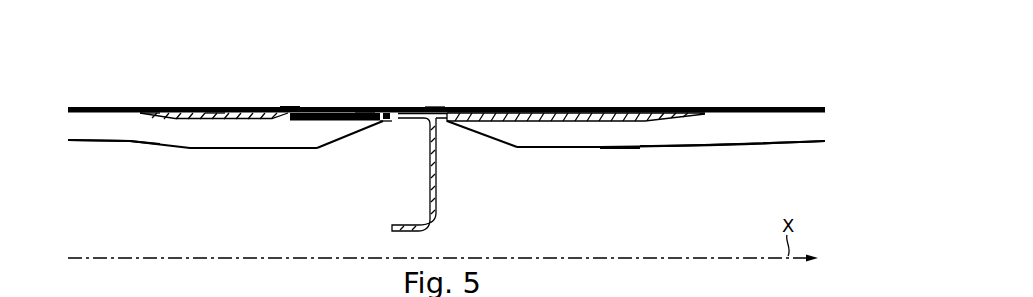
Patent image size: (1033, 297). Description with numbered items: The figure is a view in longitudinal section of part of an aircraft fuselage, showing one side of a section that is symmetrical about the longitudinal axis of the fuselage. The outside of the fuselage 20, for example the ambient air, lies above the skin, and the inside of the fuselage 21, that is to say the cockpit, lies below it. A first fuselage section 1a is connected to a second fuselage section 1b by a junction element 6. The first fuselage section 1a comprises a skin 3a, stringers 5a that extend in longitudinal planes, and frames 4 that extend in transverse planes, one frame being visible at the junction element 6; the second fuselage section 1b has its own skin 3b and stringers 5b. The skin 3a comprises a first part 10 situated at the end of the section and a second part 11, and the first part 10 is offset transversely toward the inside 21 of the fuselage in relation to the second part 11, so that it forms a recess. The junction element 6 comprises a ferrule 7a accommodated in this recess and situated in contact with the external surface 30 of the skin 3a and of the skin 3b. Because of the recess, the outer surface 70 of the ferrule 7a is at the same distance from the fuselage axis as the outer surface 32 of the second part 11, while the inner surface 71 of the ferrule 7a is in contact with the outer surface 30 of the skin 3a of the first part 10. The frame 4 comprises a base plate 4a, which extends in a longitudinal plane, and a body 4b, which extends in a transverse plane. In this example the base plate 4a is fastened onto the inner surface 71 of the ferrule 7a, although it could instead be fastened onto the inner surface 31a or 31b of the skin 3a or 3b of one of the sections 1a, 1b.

The outside of the fuselage 20 is at (688, 66).
The first part of skin 10 is at (293, 90).
The second part of skin 11 is at (147, 102).
The skin 3a is at (178, 111).
The outer surface of second part 32 is at (215, 106).
The outer surface of skin 30 is at (318, 109).
The outer surface of ferrule 70 is at (365, 107).
The ferrule 7a is at (386, 117).
The inner surface of ferrule 71 is at (385, 122).
The junction element 6 is at (433, 90).
The frame 4 is at (430, 150).
The base plate 4a is at (419, 113).
The body 4b is at (428, 190).
The skin 3b is at (611, 110).
The first fuselage section 1a is at (207, 160).
The stringers 5a is at (150, 137).
The inner surface of skin 31a is at (352, 124).
The inner surface of skin 31b is at (503, 123).
The second fuselage section 1b is at (604, 167).
The stringers 5b is at (667, 135).
The inside of the fuselage 21 is at (649, 197).